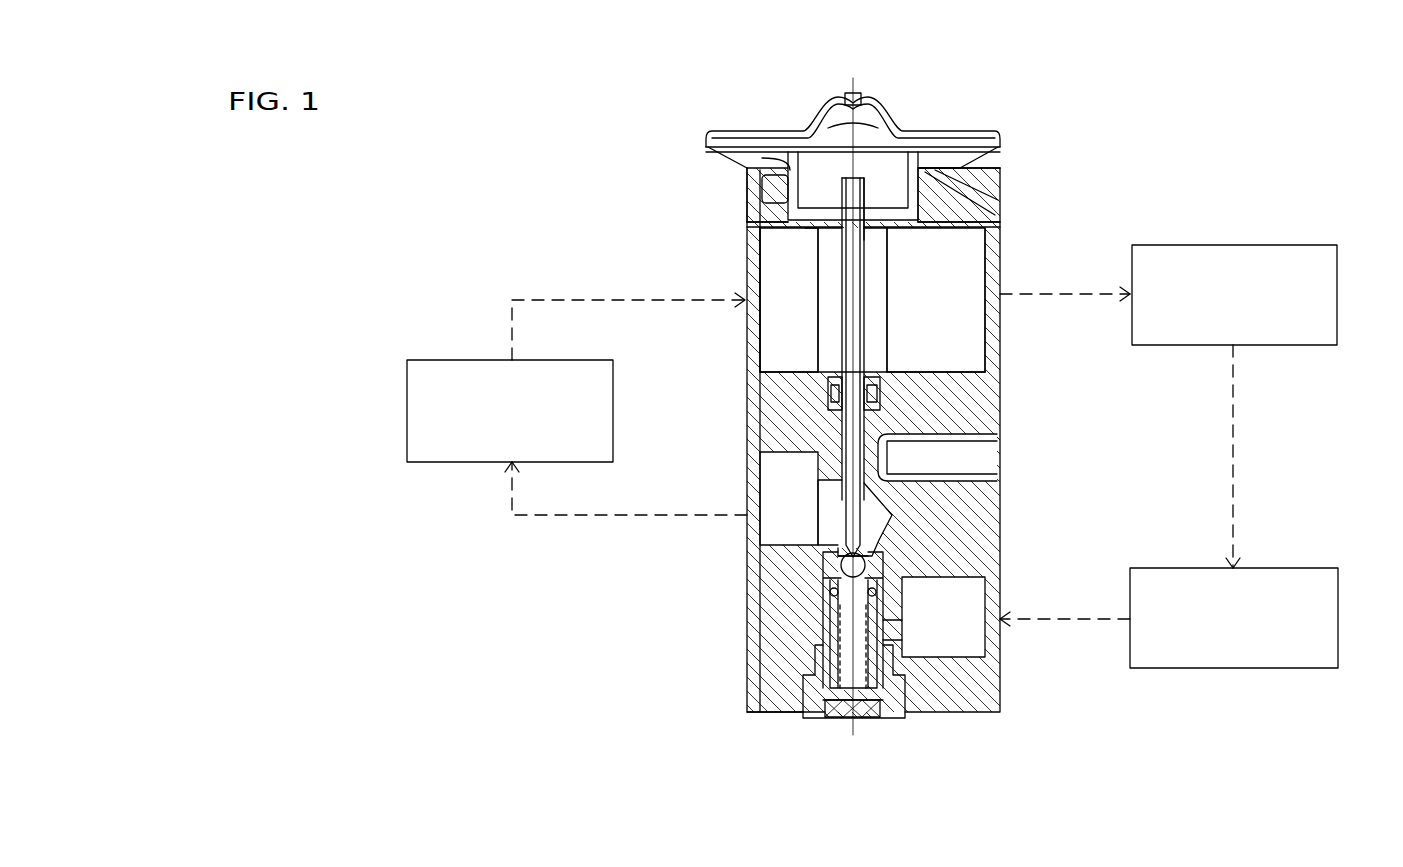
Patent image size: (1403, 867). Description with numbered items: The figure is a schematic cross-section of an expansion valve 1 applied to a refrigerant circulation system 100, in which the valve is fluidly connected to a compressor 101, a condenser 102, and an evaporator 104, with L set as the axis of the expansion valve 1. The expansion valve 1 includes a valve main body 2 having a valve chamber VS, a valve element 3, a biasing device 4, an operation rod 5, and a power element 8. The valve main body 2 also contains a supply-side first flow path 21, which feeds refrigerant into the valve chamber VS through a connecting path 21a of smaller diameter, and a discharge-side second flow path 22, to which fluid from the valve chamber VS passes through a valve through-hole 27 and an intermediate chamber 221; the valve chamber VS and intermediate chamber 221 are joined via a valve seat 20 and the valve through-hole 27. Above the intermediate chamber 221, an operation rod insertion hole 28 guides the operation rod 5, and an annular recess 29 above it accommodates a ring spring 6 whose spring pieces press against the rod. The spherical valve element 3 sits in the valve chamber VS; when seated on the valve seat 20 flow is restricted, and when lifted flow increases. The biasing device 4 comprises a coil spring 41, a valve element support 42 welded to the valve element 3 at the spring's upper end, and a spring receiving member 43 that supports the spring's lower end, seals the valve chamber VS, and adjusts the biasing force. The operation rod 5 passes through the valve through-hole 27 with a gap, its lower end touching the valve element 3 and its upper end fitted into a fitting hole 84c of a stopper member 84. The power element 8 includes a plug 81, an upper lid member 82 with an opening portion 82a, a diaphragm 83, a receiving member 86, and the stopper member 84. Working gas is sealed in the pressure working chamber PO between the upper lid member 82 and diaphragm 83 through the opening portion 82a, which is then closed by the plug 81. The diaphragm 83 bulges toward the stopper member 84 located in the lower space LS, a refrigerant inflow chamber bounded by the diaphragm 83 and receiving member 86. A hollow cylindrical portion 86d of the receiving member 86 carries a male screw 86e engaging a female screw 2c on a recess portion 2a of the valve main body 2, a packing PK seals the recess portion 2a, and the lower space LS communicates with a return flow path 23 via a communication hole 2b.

The expansion valve 1 is at (722, 86).
The refrigerant circulation system 100 is at (872, 343).
The compressor 101 is at (1258, 245).
The condenser 102 is at (1268, 568).
The evaporator 104 is at (446, 360).
The valve main body 2 is at (1000, 490).
The recess portion 2a is at (985, 222).
The communication hole 2b is at (828, 230).
The female screw 2c is at (780, 192).
The valve element 3 is at (867, 566).
The biasing device 4 is at (795, 718).
The operation rod 5 is at (866, 335).
The ring spring 6 is at (828, 392).
The power element 8 is at (859, 128).
The valve seat 20 is at (843, 600).
The first flow path 21 is at (950, 615).
The connecting path 21a is at (900, 627).
The second flow path 22 is at (778, 550).
The intermediate chamber 221 is at (826, 517).
The return flow path 23 is at (758, 335).
The valve through-hole 27 is at (884, 527).
The operation rod insertion hole 28 is at (905, 440).
The annular recess 29 is at (882, 394).
The coil spring 41 is at (878, 702).
The valve element support 42 is at (843, 607).
The spring receiving member 43 is at (818, 718).
The plug 81 is at (863, 93).
The upper lid member 82 is at (886, 130).
The opening portion 82a is at (847, 93).
The diaphragm 83 is at (932, 142).
The stopper member 84 is at (806, 130).
The fitting hole 84c is at (865, 230).
The receiving member 86 is at (745, 152).
The hollow cylindrical portion 86d is at (990, 203).
The male screw 86e is at (775, 196).
The axis L is at (853, 392).
The lower space LS is at (957, 177).
The packing PK is at (995, 190).
The pressure working chamber PO is at (915, 125).
The valve chamber VS is at (823, 607).